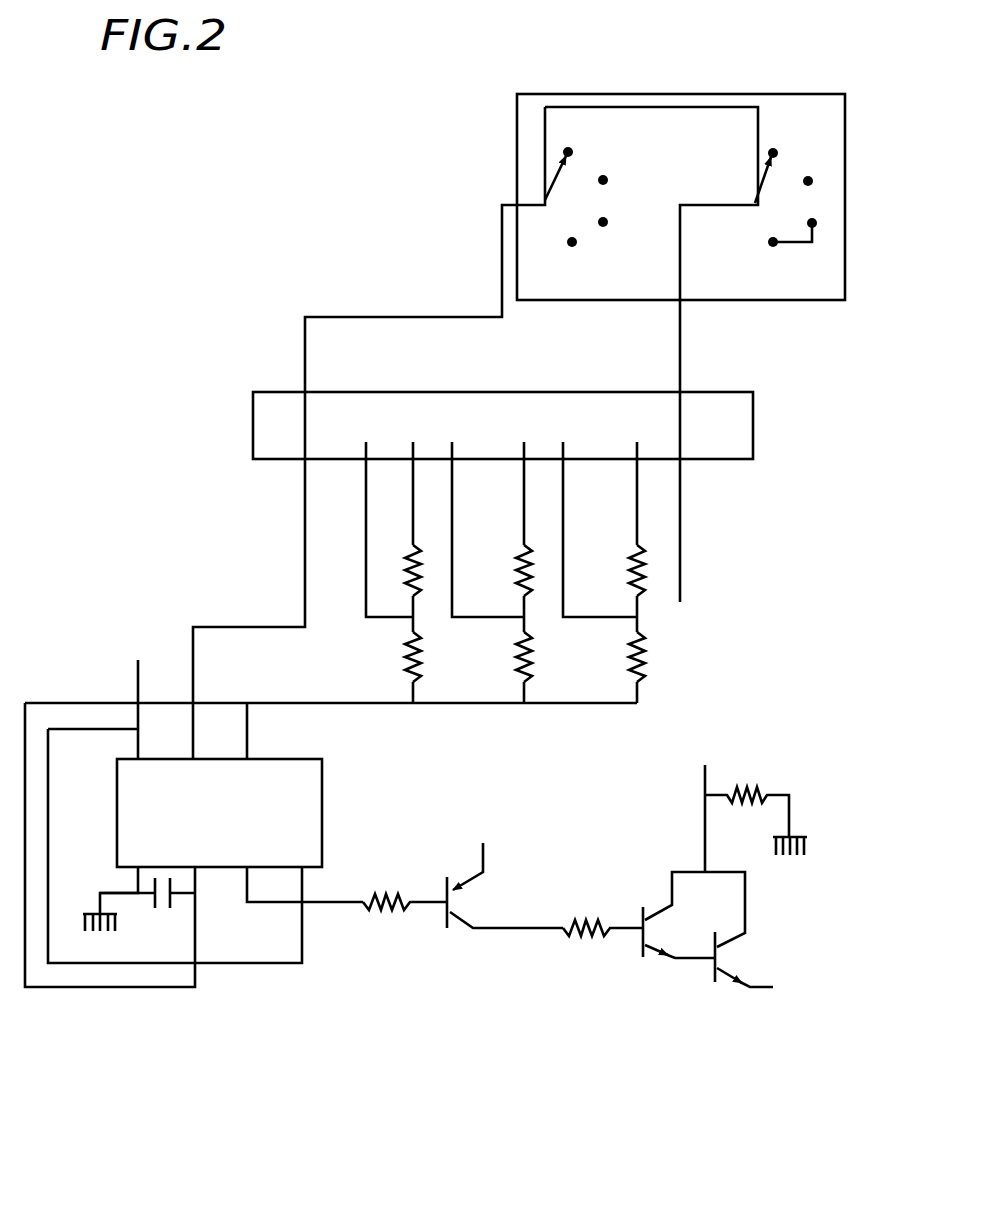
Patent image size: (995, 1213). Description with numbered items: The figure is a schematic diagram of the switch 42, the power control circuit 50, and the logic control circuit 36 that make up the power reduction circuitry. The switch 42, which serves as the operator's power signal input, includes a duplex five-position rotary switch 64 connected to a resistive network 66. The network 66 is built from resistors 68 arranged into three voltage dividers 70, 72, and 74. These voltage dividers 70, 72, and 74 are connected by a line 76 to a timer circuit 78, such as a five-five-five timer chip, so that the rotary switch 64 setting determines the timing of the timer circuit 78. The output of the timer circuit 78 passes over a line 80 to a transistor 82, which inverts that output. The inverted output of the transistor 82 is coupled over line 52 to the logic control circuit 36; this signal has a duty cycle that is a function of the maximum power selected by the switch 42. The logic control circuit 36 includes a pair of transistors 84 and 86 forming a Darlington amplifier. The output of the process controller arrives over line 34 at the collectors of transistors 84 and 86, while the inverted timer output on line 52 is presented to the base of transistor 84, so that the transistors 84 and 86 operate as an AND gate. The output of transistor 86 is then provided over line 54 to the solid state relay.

The switch 42 is at (517, 157).
The duplex five-position rotary switch 64 is at (637, 264).
The power control circuit 50 is at (199, 614).
The voltage divider 70 is at (399, 553).
The voltage divider 72 is at (505, 553).
The voltage divider 74 is at (617, 567).
The resistors 68 is at (640, 562).
The line 76 is at (318, 708).
The resistive network 66 is at (465, 712).
The timer circuit 78 is at (322, 812).
The line 80 is at (318, 903).
The transistor 82 is at (470, 906).
The transistor 84 is at (660, 908).
The transistor 86 is at (735, 937).
The line 34 is at (705, 778).
The logic control circuit 36 is at (708, 938).
The line 52 is at (628, 932).
The line 54 is at (765, 990).